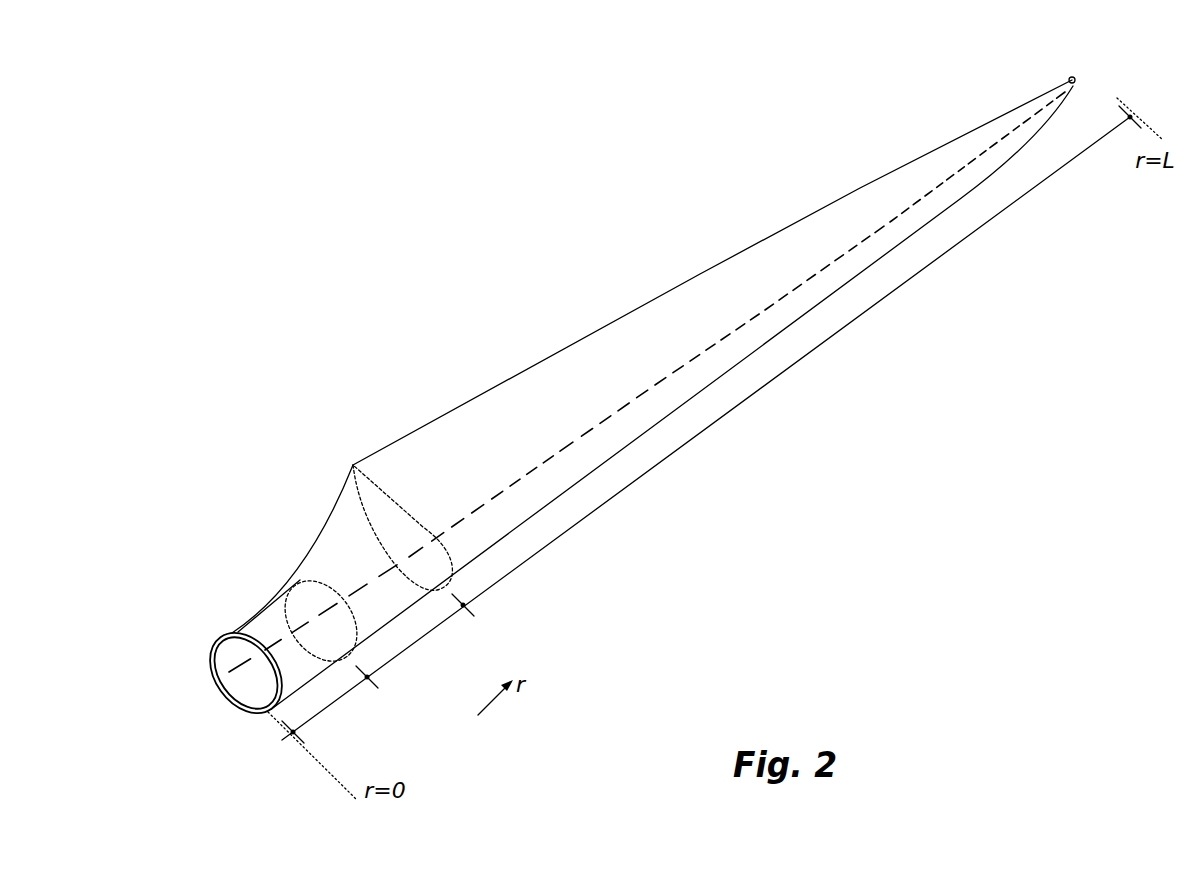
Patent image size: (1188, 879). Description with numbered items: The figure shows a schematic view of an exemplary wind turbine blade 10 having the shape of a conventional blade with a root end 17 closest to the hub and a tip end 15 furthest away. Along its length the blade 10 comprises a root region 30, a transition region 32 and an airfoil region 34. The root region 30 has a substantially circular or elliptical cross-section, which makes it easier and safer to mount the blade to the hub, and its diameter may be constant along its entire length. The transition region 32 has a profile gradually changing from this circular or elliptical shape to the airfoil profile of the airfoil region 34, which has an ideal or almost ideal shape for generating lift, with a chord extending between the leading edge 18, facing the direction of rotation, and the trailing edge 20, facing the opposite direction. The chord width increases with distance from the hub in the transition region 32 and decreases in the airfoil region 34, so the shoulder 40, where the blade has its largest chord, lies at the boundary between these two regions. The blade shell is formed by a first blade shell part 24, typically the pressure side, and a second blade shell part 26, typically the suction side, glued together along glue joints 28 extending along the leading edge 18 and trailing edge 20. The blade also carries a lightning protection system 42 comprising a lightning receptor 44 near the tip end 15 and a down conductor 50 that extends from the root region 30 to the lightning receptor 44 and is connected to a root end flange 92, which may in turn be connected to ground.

The wind turbine blade 10 is at (496, 271).
The tip end 15 is at (1080, 93).
The root end 17 is at (212, 673).
The leading edge 18 is at (830, 296).
The trailing edge 20 is at (713, 266).
The first blade shell part 24 is at (252, 614).
The second blade shell part 26 is at (263, 709).
The glue joints 28 is at (231, 630).
The root region 30 is at (337, 700).
The transition region 32 is at (421, 640).
The airfoil region 34 is at (731, 409).
The shoulder 40 is at (353, 465).
The lightning protection system 42 is at (832, 232).
The lightning receptor 44 is at (1078, 83).
The down conductor 50 is at (620, 404).
The root end flange 92 is at (230, 690).